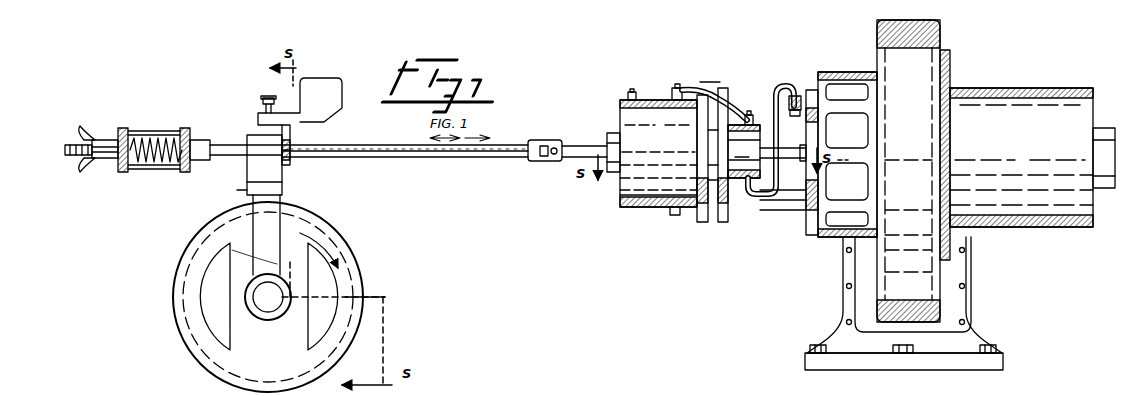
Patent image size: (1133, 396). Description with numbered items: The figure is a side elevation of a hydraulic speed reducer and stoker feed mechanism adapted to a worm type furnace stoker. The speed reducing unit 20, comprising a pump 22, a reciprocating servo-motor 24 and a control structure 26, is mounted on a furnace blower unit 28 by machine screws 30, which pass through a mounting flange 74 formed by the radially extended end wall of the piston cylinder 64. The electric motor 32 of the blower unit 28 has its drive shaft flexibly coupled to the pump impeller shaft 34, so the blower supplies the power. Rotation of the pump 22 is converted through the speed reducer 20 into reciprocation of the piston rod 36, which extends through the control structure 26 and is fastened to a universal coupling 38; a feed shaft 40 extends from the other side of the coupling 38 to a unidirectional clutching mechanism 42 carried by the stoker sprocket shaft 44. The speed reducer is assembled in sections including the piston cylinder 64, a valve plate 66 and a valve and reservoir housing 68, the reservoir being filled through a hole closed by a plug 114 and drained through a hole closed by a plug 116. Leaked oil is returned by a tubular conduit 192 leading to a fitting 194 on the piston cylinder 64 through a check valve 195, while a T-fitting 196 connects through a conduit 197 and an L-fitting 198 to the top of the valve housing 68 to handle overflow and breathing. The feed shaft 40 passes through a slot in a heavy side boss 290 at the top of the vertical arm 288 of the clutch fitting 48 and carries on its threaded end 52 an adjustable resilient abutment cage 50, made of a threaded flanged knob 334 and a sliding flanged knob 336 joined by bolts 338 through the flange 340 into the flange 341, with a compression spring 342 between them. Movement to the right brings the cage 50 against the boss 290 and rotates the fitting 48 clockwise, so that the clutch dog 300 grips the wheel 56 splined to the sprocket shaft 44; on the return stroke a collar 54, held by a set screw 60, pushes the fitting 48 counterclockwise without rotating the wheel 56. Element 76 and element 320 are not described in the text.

The speed reducing unit 20 is at (710, 82).
The pump 22 is at (735, 125).
The reciprocating servo-motor 24 is at (783, 206).
The control structure 26 is at (650, 100).
The furnace blower unit 28 is at (950, 36).
The machine screws 30 is at (803, 214).
The electric motor 32 is at (1000, 88).
The pump impeller shaft 34 is at (780, 158).
The piston rod 36 is at (580, 145).
The universal coupling 38 is at (548, 163).
The feed shaft 40 is at (383, 146).
The unidirectional clutching mechanism 42 is at (285, 182).
The stoker sprocket shaft 44 is at (270, 306).
The clutch fitting 48 is at (273, 214).
The adjustable resilient abutment cage 50 is at (156, 170).
The threaded end 52 is at (68, 152).
The collar 54 is at (290, 126).
The wheel 56 is at (362, 290).
The set screw 60 is at (290, 148).
The piston cylinder 64 is at (745, 204).
The valve plate 66 is at (704, 222).
The valve and reservoir housing 68 is at (641, 207).
The mounting flange 74 is at (816, 235).
The flange 76 is at (723, 222).
The plug 114 is at (628, 95).
The plug 116 is at (676, 215).
The tubular conduit 192 is at (782, 96).
The fitting 194 is at (793, 116).
The check valve 195 is at (798, 96).
The T-fitting 196 is at (750, 113).
The conduit 197 is at (700, 88).
The L-fitting 198 is at (678, 86).
The arm 288 is at (273, 240).
The side boss 290 is at (247, 190).
The clutch dog 300 is at (264, 165).
The bracket 320 is at (326, 82).
The flanged knob 334 is at (123, 130).
The flanged knob 336 is at (198, 138).
The bolts 338 is at (124, 172).
The flange 340 is at (107, 140).
The flange 341 is at (185, 170).
The compression spring 342 is at (155, 134).